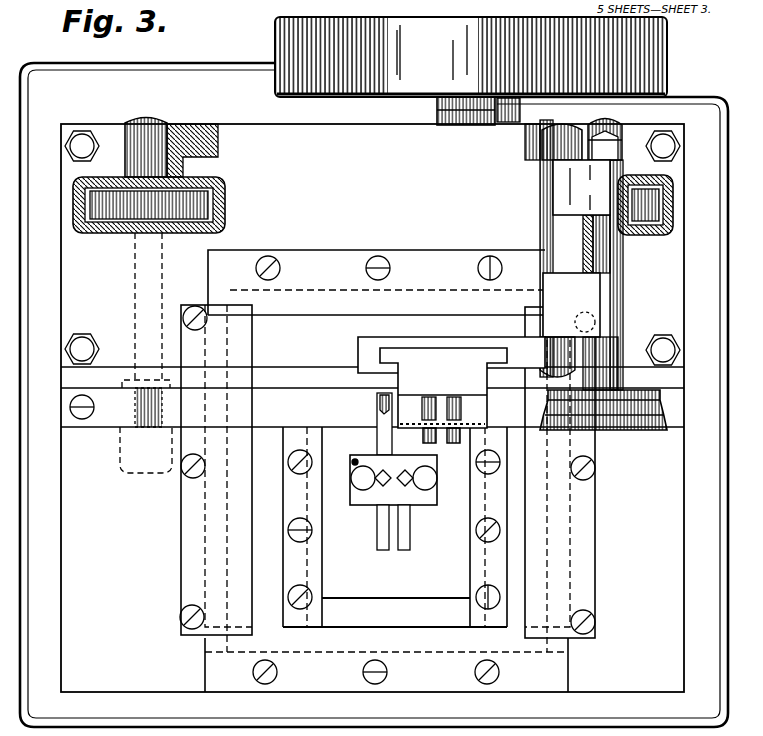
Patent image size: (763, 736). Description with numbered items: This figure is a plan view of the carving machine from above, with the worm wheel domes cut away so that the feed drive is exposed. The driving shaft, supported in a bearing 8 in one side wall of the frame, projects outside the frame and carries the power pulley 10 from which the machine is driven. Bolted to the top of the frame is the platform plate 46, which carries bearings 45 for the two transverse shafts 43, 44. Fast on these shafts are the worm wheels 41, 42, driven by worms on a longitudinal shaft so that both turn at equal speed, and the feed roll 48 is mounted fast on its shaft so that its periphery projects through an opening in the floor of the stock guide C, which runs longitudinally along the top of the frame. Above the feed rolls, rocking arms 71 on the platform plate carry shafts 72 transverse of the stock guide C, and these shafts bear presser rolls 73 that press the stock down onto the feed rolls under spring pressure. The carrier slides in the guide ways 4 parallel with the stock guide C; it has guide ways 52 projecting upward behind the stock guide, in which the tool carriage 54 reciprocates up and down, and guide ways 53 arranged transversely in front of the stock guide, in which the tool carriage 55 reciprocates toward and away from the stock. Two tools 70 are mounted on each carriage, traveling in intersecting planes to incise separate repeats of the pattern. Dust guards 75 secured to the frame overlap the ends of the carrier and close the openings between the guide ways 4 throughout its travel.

The power pulley 10 is at (471, 57).
The bearing 8 is at (438, 115).
The platform plate 46 is at (372, 408).
The bearings 45 is at (140, 138).
The shaft 43 is at (150, 118).
The worm wheel 41 is at (213, 200).
The shaft 44 is at (600, 120).
The worm wheel 42 is at (675, 200).
The rocking arms 71 is at (578, 296).
The shafts 72 is at (613, 250).
The presser rolls 73 is at (612, 430).
The guide ways 4 is at (386, 471).
The stock guide C is at (372, 397).
The guide ways 52 is at (358, 357).
The tool carriage 54 is at (443, 388).
The tools 70 is at (456, 401).
The feed roll 48 is at (130, 426).
The dust guards 75 is at (193, 524).
The tool carriage 55 is at (395, 527).
The guide ways 53 is at (470, 613).